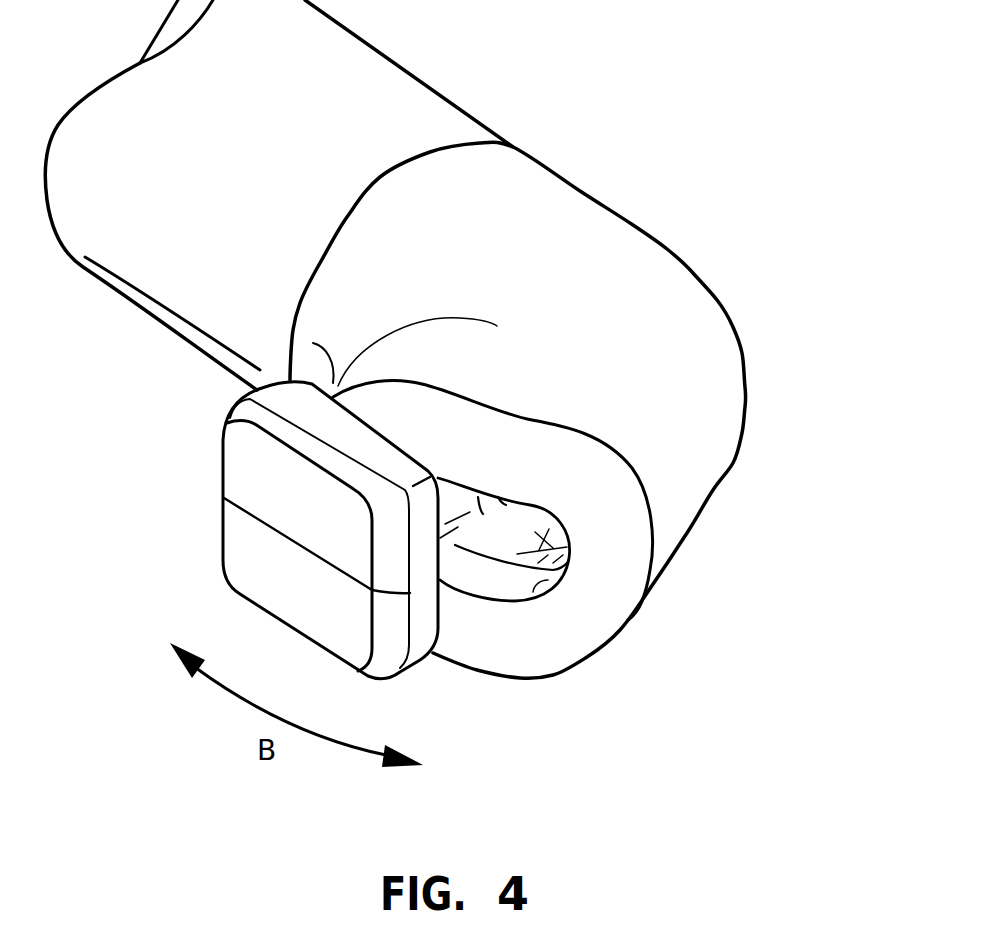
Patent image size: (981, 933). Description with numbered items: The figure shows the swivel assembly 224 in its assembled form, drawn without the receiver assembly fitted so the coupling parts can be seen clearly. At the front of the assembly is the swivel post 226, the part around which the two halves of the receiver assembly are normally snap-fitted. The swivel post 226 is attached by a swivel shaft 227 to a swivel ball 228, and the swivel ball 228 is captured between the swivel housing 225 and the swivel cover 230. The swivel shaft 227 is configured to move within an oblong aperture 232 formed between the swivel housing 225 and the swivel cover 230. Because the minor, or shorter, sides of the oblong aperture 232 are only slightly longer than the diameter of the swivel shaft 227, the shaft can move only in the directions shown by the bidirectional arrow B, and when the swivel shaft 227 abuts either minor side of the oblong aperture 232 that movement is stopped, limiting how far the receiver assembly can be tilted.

The swivel assembly 224 is at (666, 183).
The swivel housing 225 is at (710, 325).
The swivel post 226 is at (243, 552).
The swivel shaft 227 is at (457, 547).
The swivel ball 228 is at (577, 547).
The swivel cover 230 is at (537, 643).
The oblong aperture 232 is at (535, 605).